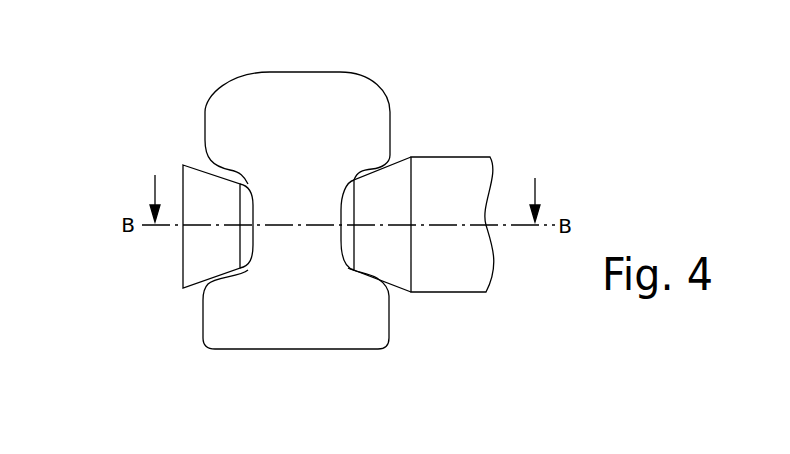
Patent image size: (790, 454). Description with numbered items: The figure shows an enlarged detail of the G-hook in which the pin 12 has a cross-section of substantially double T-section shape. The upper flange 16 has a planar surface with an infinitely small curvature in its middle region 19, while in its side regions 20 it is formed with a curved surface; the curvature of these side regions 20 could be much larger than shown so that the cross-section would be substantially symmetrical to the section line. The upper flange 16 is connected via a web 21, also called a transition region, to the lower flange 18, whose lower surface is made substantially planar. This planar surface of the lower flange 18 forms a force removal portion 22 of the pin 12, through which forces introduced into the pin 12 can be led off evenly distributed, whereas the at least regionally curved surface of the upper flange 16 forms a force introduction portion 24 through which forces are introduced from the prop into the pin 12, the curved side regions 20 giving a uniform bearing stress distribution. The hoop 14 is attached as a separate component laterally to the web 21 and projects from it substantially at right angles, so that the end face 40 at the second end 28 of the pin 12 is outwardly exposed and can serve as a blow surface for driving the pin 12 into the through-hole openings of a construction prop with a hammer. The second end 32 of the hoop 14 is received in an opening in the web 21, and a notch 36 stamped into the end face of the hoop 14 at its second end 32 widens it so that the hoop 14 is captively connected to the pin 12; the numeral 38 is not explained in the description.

The pin 12 is at (194, 145).
The hoop 14 is at (478, 187).
The upper flange 16 is at (333, 137).
The lower flange 18 is at (365, 316).
The middle region 19 is at (303, 72).
The side regions 20 is at (222, 98).
The web 21 is at (283, 237).
The force removal portion 22 is at (335, 349).
The force introduction portion 24 is at (348, 78).
The second end of the pin 28 is at (299, 162).
The end face 40 is at (337, 175).
The second end of the hoop 32 is at (149, 232).
The notch 36 is at (149, 232).
The flange 38 is at (202, 243).